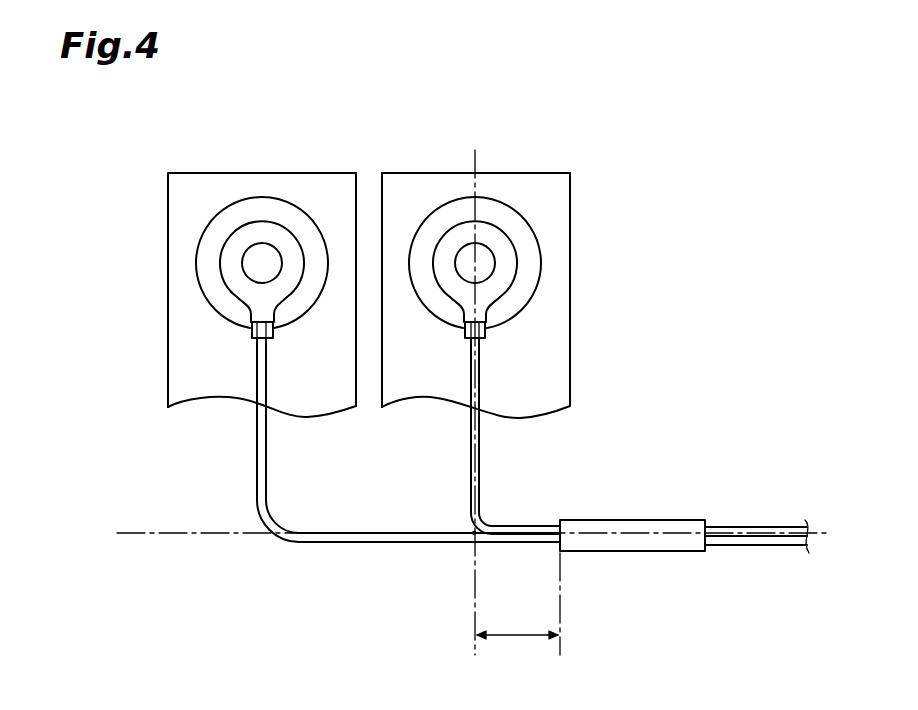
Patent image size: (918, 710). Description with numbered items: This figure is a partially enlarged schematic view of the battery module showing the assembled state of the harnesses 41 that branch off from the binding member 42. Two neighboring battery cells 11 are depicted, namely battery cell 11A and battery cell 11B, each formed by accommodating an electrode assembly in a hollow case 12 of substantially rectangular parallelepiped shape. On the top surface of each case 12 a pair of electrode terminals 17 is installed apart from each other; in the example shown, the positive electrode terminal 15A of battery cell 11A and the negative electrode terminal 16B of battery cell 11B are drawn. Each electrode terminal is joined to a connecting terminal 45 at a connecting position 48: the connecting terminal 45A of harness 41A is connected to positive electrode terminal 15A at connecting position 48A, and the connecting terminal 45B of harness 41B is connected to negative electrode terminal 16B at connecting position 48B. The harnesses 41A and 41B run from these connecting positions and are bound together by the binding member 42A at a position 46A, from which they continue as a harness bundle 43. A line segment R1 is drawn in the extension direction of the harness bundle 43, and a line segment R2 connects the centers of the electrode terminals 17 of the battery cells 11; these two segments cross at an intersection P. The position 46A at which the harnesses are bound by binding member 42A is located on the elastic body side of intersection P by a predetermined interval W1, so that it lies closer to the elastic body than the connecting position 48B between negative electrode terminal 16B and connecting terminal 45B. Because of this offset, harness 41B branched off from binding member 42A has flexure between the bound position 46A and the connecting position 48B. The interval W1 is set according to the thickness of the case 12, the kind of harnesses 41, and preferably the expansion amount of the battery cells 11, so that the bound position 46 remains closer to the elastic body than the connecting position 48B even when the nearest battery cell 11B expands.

The battery cell 11 is at (376, 261).
The battery cell 11A is at (312, 172).
The battery cell 11B is at (537, 172).
The case 12 is at (168, 395).
The electrode terminal 17 is at (370, 262).
The positive electrode terminal 15A is at (198, 248).
The negative electrode terminal 16B is at (541, 250).
The connecting terminal 45 is at (370, 271).
The connecting terminal 45A is at (221, 276).
The connecting terminal 45B is at (515, 278).
The connecting position 48 is at (370, 334).
The connecting position 48A is at (252, 330).
The connecting position 48B is at (486, 330).
The harness 41 is at (345, 440).
The harness 41A is at (257, 478).
The harness 41B is at (472, 453).
The position at which the harnesses are bound 46 is at (605, 510).
The position at which the harnesses are bound 46A is at (557, 521).
The binding member 42 is at (717, 506).
The binding member 42A is at (673, 520).
The harness bundle 43 is at (753, 503).
The intersection P is at (474, 533).
The line segment R1 is at (200, 535).
The line segment R2 is at (474, 597).
The predetermined interval W1 is at (518, 609).